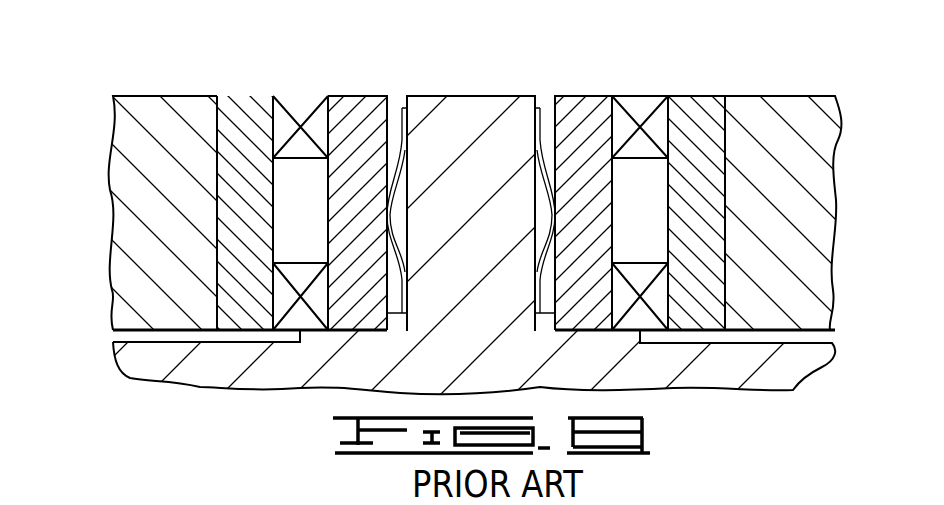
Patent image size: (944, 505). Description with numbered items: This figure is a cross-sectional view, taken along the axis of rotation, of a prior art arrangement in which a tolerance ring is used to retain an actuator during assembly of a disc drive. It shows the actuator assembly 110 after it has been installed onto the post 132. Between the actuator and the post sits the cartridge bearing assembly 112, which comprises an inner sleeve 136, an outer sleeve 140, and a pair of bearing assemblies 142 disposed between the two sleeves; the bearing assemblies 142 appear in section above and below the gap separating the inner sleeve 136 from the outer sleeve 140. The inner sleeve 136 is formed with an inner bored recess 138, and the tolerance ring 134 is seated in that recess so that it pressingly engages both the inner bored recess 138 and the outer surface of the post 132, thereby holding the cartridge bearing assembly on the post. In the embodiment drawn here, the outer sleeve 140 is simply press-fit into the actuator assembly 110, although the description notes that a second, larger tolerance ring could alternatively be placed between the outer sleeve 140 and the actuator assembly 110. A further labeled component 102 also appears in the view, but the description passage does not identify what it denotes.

The base plate / substrate 102 is at (783, 358).
The actuator assembly 110 is at (145, 72).
The cartridge bearing assembly 112 is at (270, 63).
The post 132 is at (478, 108).
The tolerance ring 134 is at (386, 158).
The inner sleeve 136 is at (358, 95).
The inner bored recess 138 is at (555, 110).
The outer sleeve 140 is at (247, 95).
The bearing assemblies 142 is at (298, 104).